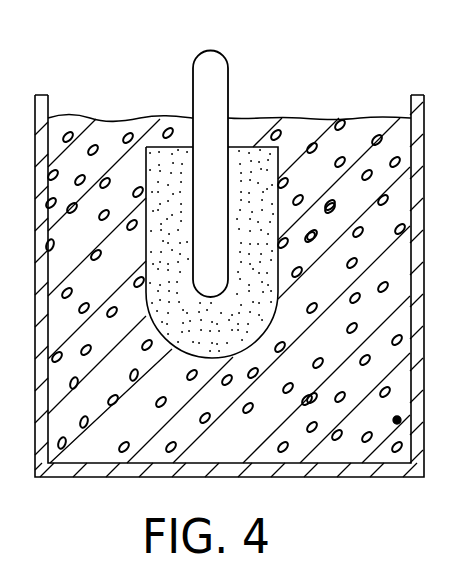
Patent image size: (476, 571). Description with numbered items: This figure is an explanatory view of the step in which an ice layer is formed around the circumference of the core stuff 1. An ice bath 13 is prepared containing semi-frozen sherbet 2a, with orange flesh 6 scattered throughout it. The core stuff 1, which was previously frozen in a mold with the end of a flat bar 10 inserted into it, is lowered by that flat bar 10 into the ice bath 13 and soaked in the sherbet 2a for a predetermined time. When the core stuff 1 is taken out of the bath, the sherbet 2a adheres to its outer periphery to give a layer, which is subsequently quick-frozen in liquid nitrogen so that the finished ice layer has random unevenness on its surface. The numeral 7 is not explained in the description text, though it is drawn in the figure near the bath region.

The ice bath 13 is at (37, 95).
The flat bar 10 is at (210, 52).
The molten bath 7 is at (238, 75).
The core stuff 1 is at (260, 147).
The semi-frozen sherbet 2a is at (383, 118).
The orange flesh 6 is at (400, 200).